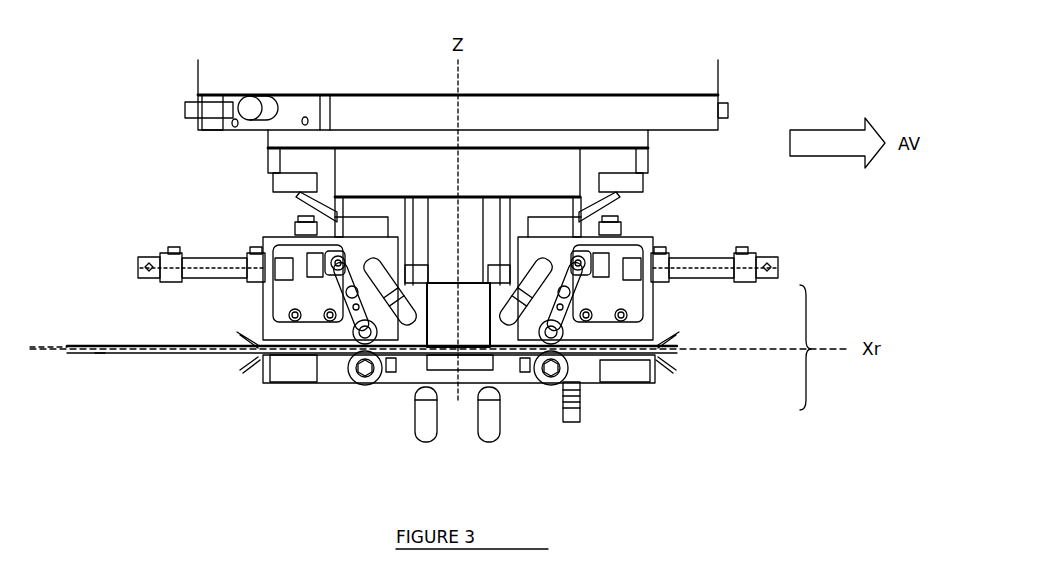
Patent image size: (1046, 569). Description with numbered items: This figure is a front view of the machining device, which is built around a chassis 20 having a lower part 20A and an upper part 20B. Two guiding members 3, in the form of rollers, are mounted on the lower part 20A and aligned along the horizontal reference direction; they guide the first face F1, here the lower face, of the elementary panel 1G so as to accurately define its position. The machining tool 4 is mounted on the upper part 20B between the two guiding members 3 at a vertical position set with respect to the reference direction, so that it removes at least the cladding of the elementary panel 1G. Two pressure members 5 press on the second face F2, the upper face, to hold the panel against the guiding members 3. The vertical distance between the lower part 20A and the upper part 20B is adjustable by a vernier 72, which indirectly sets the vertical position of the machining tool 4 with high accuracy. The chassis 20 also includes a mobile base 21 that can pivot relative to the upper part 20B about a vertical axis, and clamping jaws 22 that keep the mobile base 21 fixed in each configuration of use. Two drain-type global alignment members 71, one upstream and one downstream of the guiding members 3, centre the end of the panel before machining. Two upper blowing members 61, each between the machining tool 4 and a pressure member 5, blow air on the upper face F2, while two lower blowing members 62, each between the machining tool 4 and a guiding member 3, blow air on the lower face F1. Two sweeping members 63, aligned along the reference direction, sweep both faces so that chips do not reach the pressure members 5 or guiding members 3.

The mobile base 21 is at (528, 100).
The clamping jaws 22 is at (210, 108).
The machining tool 4 is at (448, 218).
The pressure member 5 is at (320, 290).
The upper blowing member 61 is at (382, 272).
The guiding member 3 is at (365, 387).
The sweeping member 63 is at (392, 370).
The lower blowing member 62 is at (420, 420).
The vernier 72 is at (568, 425).
The global alignment member 71 is at (270, 373).
The chassis 20 is at (822, 347).
The lower part 20A is at (663, 378).
The upper part 20B is at (662, 315).
The elementary panel 1G is at (168, 356).
The first face F1 is at (100, 356).
The second face F2 is at (110, 344).